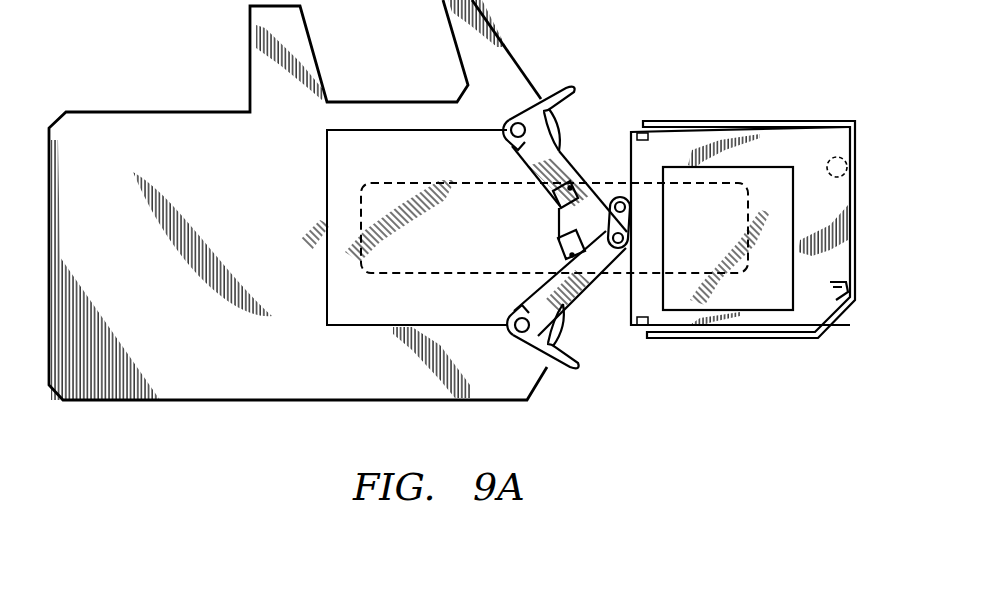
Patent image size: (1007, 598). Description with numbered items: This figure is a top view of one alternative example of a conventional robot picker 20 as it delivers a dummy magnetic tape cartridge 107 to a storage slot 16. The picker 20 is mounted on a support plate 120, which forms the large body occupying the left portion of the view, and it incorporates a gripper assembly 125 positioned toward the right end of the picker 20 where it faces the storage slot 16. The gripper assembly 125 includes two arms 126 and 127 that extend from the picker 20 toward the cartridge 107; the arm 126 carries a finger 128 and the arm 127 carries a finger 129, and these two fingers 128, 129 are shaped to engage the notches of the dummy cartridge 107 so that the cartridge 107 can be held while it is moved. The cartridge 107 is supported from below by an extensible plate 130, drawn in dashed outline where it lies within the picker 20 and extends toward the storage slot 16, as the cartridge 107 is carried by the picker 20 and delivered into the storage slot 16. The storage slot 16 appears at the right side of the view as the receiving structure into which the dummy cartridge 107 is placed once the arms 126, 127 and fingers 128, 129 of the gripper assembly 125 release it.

The storage slot 16 is at (855, 304).
The picker 20 is at (318, 176).
The dummy magnetic tape cartridge 107 is at (778, 140).
The support plate 120 is at (210, 401).
The gripper assembly 125 is at (540, 206).
The arm 126 is at (520, 150).
The arm 127 is at (526, 290).
The finger 128 is at (550, 92).
The finger 129 is at (564, 376).
The extensible plate 130 is at (375, 273).